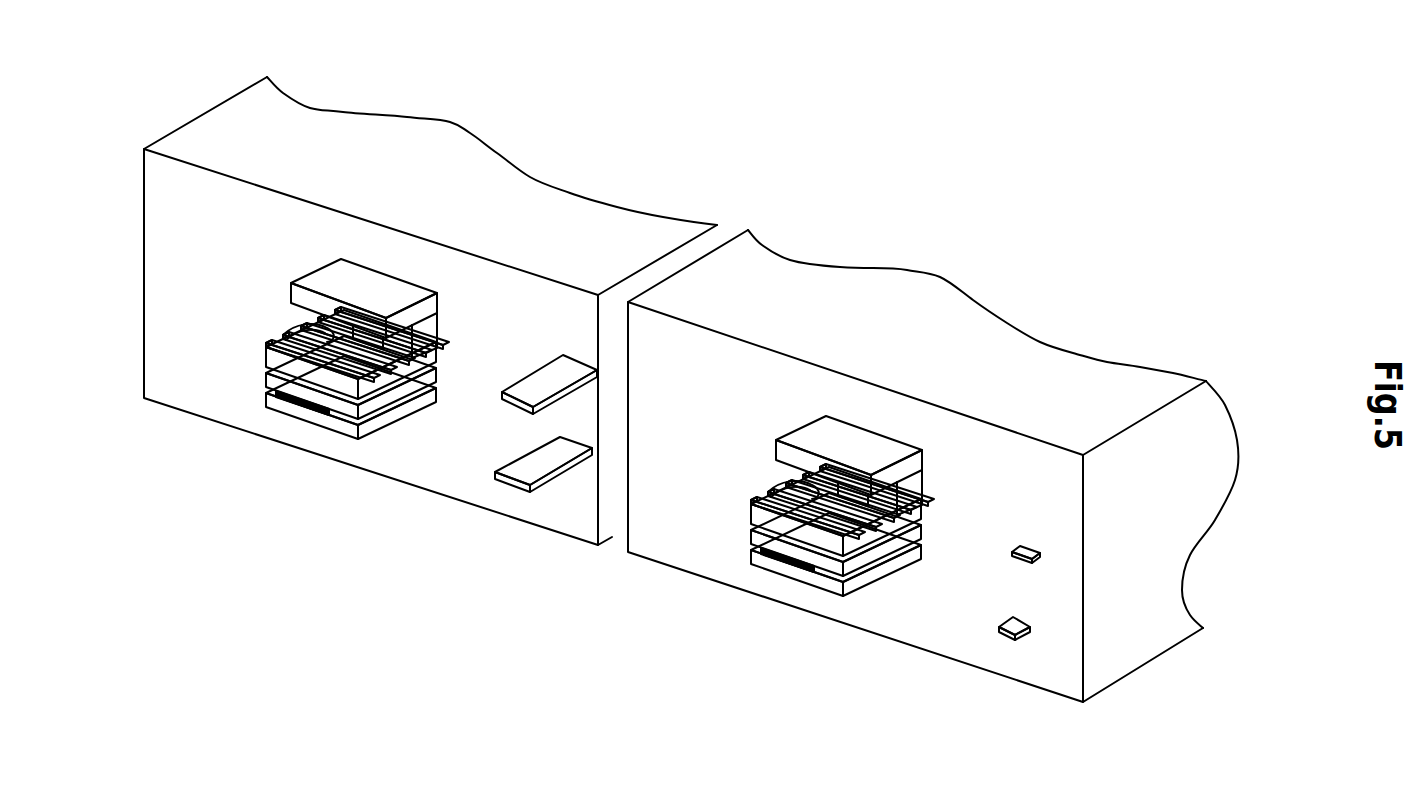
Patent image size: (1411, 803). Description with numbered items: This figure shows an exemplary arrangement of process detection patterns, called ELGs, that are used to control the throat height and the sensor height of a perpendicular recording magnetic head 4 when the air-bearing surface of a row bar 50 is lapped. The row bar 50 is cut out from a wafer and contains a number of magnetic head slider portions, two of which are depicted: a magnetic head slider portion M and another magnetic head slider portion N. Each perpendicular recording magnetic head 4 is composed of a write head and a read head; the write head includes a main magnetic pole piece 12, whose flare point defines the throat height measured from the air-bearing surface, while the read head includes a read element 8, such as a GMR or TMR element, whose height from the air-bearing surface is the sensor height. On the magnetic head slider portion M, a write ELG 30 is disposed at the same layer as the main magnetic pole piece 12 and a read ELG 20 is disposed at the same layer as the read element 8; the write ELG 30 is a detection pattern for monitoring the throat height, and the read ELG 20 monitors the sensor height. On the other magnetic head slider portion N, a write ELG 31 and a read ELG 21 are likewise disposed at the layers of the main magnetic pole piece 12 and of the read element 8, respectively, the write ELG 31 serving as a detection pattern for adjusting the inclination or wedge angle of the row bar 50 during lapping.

The row bar 50 is at (856, 178).
The magnetic head slider portion M is at (620, 240).
The magnetic head slider portion N is at (1107, 395).
The perpendicular recording magnetic head 4 is at (281, 293).
The main magnetic pole piece 12 is at (292, 327).
The read element 8 is at (306, 407).
The write ELG 30 is at (563, 380).
The read ELG 20 is at (521, 468).
The write ELG 31 is at (1024, 545).
The read ELG 21 is at (1005, 637).